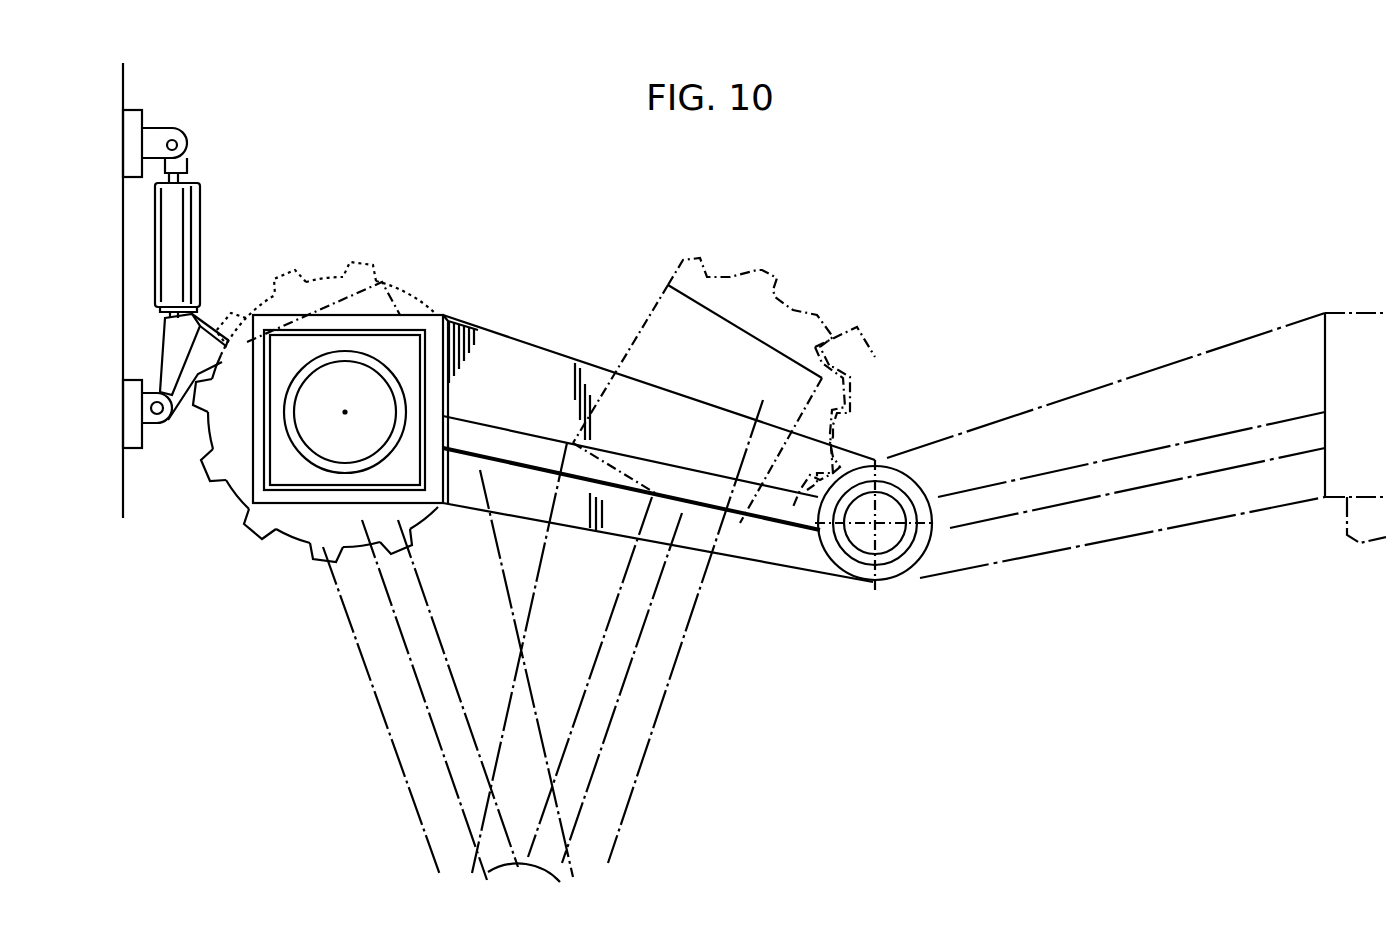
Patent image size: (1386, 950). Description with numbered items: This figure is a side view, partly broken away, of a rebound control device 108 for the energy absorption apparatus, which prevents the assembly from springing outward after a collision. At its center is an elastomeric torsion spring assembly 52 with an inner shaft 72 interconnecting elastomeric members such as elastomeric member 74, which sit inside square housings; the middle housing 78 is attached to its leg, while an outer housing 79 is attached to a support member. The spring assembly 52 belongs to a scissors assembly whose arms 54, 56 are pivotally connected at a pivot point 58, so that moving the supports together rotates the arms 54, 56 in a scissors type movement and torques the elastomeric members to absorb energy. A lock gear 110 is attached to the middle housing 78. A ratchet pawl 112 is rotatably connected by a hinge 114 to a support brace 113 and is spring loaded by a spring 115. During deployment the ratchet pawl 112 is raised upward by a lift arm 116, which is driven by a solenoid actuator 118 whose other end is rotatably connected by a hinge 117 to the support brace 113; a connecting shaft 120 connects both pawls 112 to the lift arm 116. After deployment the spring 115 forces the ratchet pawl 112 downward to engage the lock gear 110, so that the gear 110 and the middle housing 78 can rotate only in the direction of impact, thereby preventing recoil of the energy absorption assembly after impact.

The elastomeric torsion spring assembly 52 is at (372, 343).
The extending arm 54 is at (1135, 480).
The extending arm 56 is at (720, 497).
The pivot point 58 is at (878, 528).
The inner shaft 72 is at (393, 345).
The elastomeric member 74 is at (300, 477).
The middle housing 78 is at (617, 362).
The outer housing 79 is at (420, 316).
The rebound control device 108 is at (337, 156).
The lock gear 110 is at (297, 533).
The ratchet pawl 112 is at (175, 365).
The support brace 113 is at (127, 83).
The hinge 114 is at (135, 450).
The spring 115 is at (155, 382).
The lift arm 116 is at (193, 313).
The hinge 117 is at (178, 127).
The solenoid actuator 118 is at (200, 203).
The connecting shaft 120 is at (159, 418).